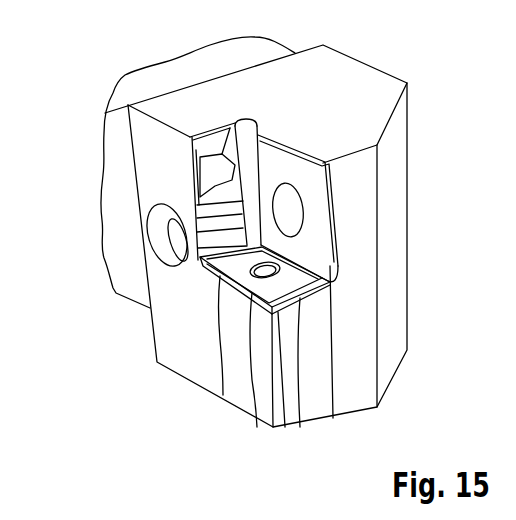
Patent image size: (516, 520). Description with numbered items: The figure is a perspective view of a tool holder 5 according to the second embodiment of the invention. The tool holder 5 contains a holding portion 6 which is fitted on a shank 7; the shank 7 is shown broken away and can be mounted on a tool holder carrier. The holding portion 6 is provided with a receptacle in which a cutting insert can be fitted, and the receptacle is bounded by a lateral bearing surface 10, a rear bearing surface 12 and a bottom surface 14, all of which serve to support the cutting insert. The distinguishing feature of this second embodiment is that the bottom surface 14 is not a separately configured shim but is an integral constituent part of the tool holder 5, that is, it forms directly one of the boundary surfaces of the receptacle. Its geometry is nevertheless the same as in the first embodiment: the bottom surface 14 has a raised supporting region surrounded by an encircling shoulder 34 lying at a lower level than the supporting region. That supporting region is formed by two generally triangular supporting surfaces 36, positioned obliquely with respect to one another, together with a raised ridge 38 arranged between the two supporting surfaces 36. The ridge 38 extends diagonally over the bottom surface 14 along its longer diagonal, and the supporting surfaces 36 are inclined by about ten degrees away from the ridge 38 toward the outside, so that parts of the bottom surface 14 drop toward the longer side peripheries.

The tool holder 5 is at (91, 355).
The holding portion 6 is at (373, 92).
The shank 7 is at (147, 78).
The lateral bearing surface 10 is at (276, 166).
The rear bearing surface 12 is at (212, 188).
The bottom surface 14 is at (303, 266).
The encircling shoulder 34 is at (310, 305).
The supporting surfaces 36 is at (217, 268).
The ridge 38 is at (223, 395).